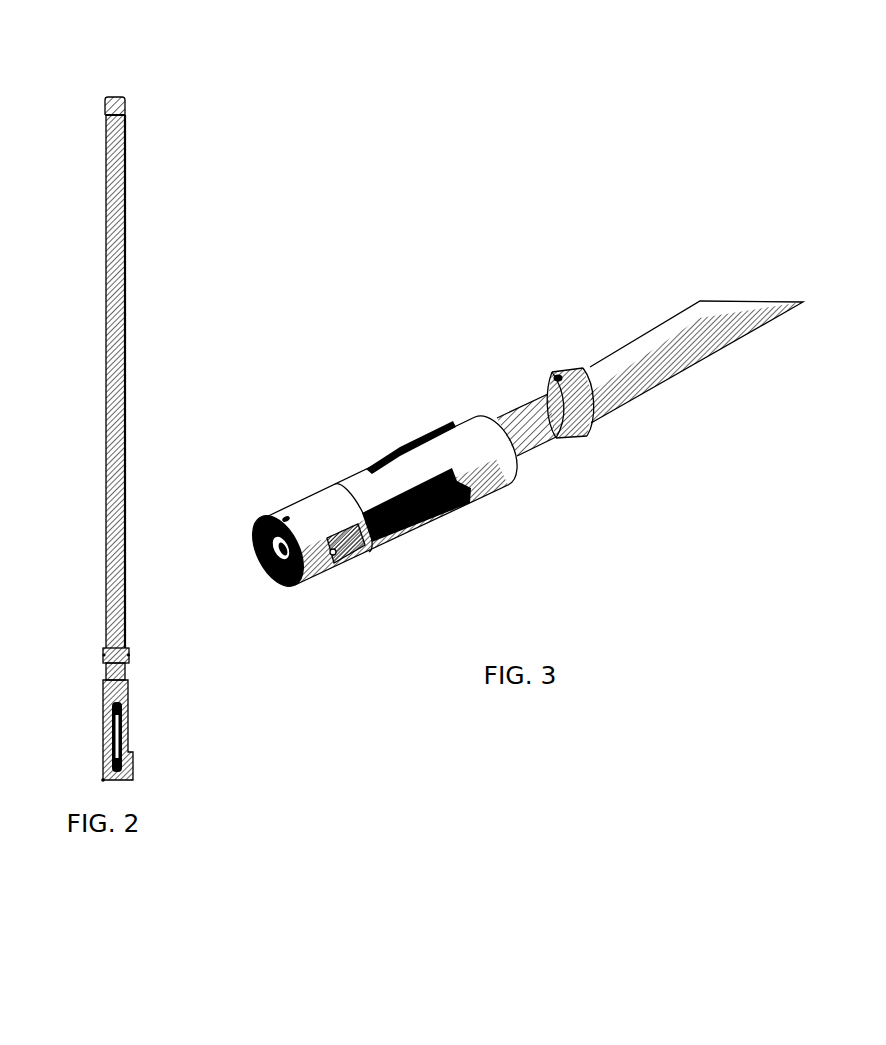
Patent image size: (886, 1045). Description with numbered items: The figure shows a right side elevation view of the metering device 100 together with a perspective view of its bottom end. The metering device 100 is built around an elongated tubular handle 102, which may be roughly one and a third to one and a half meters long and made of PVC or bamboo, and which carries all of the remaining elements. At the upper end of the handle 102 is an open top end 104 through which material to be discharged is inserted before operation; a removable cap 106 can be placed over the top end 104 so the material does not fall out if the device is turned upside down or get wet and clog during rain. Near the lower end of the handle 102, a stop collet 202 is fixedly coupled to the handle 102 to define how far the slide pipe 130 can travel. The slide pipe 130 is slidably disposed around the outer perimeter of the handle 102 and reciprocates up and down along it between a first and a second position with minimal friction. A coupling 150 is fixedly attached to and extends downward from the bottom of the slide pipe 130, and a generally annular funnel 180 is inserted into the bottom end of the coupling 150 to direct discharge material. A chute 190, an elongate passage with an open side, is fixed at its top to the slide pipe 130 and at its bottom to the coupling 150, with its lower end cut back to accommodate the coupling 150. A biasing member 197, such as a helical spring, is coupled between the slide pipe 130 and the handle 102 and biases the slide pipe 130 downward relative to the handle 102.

In FIG. 2, the metering device 100 is at (155, 404).
In FIG. 2, the handle 102 is at (127, 323).
In FIG. 3, the handle 102 is at (668, 315).
In FIG. 2, the top end 104 is at (125, 122).
In FIG. 2, the cap 106 is at (123, 100).
In FIG. 2, the stop collet 202 is at (117, 652).
In FIG. 3, the stop collet 202 is at (556, 375).
In FIG. 3, the slide pipe 130 is at (371, 502).
In FIG. 3, the biasing member 197 is at (403, 443).
In FIG. 3, the coupling 150 is at (292, 498).
In FIG. 3, the funnel 180 is at (273, 577).
In FIG. 3, the chute 190 is at (407, 523).